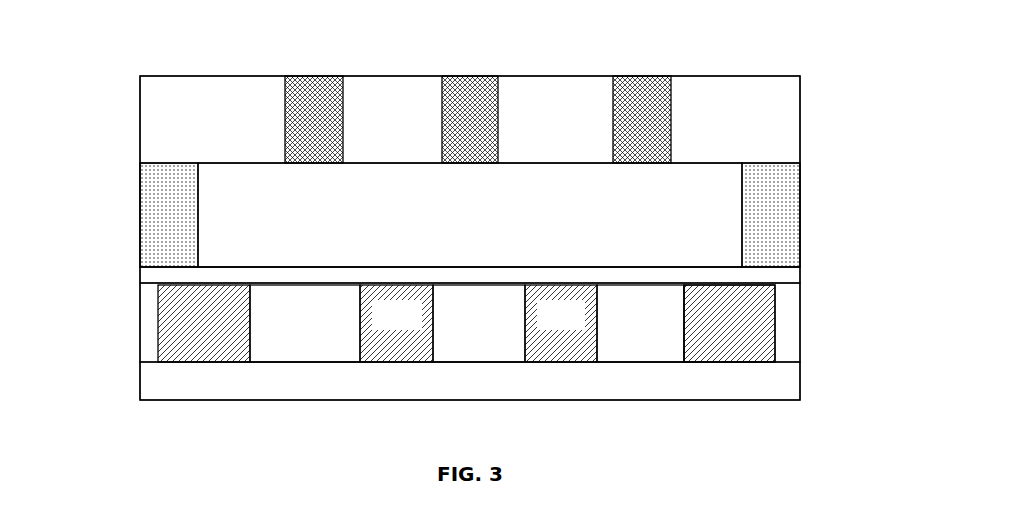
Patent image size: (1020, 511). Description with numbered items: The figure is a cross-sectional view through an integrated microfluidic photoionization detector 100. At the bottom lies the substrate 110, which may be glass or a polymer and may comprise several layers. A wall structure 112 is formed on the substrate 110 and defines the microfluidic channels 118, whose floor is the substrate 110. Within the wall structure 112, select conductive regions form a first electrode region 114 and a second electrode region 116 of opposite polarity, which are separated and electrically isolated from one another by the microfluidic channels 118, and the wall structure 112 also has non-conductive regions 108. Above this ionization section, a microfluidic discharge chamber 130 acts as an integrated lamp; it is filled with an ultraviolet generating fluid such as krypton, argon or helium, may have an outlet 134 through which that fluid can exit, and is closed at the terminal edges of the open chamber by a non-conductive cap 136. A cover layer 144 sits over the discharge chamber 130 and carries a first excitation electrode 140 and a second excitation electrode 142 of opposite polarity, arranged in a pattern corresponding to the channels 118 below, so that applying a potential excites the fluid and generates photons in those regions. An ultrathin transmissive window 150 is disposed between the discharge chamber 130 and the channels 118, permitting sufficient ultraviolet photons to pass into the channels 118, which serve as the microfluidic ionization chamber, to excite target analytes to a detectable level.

The integrated microfluidic photoionization detector 100 is at (93, 72).
The non-conductive region 108 is at (800, 297).
The substrate 110 is at (470, 381).
The wall structure 112 is at (755, 329).
The first electrode region 114 is at (203, 332).
The second electrode region 116 is at (878, 352).
The microfluidic channel 118 is at (467, 323).
The microfluidic discharge chamber 130 is at (470, 215).
The outlet 134 is at (150, 208).
The non-conductive cap 136 is at (786, 205).
The first excitation electrode 140 is at (320, 80).
The second excitation electrode 142 is at (654, 78).
The cover layer 144 is at (800, 110).
The ultrathin transmissive window 150 is at (800, 275).